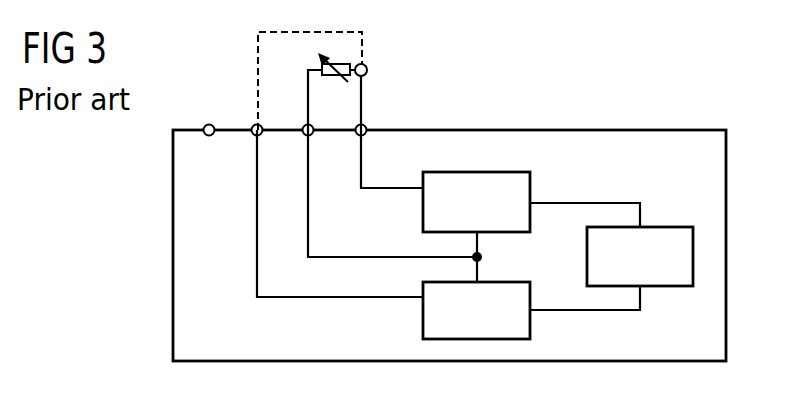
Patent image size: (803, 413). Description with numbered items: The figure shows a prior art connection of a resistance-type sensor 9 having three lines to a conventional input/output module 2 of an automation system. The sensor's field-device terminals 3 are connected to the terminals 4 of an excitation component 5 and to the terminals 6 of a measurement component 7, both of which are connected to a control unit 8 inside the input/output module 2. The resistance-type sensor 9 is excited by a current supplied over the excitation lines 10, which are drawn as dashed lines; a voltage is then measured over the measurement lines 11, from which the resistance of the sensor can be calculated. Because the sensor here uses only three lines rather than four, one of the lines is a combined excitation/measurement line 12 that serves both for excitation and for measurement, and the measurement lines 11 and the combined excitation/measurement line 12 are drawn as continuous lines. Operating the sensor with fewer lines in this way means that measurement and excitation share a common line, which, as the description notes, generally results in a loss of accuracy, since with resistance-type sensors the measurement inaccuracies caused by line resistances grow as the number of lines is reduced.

The input/output module 2 is at (593, 130).
The field-device terminals 3 is at (357, 134).
The terminals of excitation component 4 is at (481, 276).
The excitation component 5 is at (530, 326).
The terminals of measurement component 6 is at (423, 180).
The measurement component 7 is at (465, 172).
The control unit 8 is at (662, 227).
The resistance-type sensor 9 is at (350, 62).
The excitation lines 10 is at (258, 64).
The measurement lines 11 is at (362, 97).
The combined excitation/measurement lines 12 is at (308, 98).